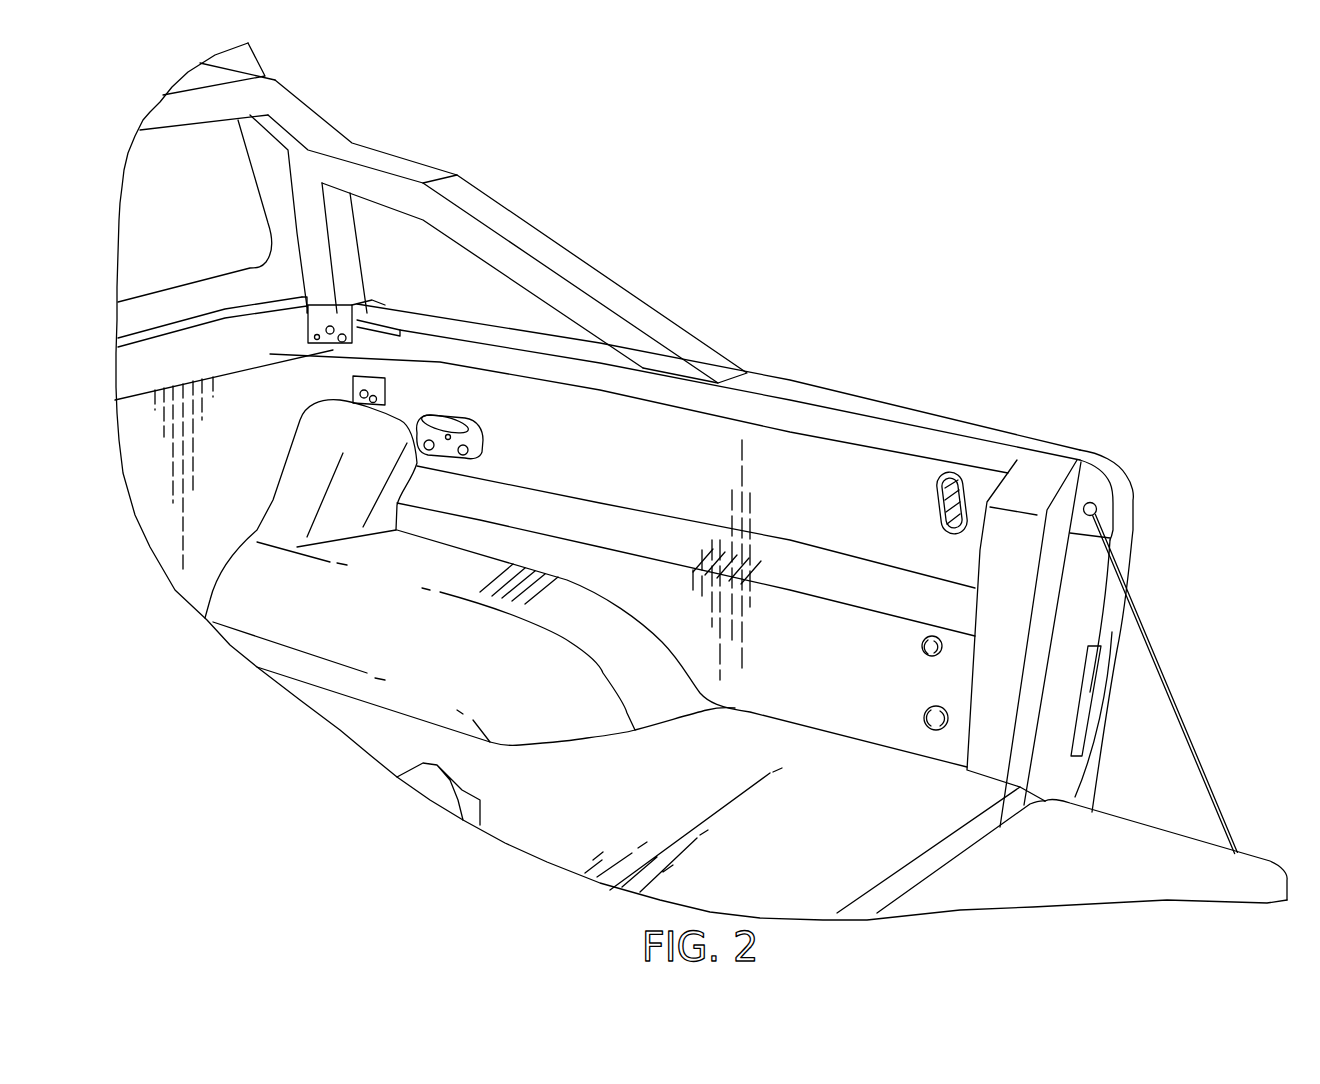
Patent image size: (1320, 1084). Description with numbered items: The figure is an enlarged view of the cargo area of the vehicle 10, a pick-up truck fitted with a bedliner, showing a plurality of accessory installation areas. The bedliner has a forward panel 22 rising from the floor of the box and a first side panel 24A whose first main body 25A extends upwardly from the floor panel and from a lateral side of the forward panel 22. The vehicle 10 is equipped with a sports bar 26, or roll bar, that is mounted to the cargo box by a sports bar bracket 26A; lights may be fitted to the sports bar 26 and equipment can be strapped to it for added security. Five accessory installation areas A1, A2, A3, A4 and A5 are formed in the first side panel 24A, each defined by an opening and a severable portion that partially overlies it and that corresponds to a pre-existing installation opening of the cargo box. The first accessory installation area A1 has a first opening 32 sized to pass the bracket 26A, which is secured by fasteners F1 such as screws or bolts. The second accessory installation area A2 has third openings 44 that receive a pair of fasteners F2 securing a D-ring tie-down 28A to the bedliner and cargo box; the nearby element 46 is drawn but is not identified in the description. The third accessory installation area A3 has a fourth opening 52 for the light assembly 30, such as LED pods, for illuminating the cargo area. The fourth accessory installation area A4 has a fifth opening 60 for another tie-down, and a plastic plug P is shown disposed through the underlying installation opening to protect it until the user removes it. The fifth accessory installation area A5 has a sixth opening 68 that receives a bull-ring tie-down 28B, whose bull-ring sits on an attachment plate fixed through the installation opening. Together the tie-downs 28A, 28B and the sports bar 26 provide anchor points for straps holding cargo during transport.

The vehicle 10 is at (913, 200).
The forward panel 22 is at (198, 451).
The first side panel 24A is at (833, 397).
The first main body 25A is at (680, 455).
The sports bar 26 is at (187, 110).
The sports bar bracket 26A is at (320, 317).
The D-ring tie-down 28A is at (478, 466).
The bull-ring tie-down 28B is at (960, 748).
The light assembly 30 is at (931, 465).
The first opening 32 is at (379, 415).
The third openings 44 is at (478, 477).
The anchor pin 46 is at (449, 450).
The fourth opening 52 is at (918, 486).
The fifth opening 60 is at (940, 660).
The sixth opening 68 is at (930, 740).
The first accessory installation area A1 is at (353, 415).
The second accessory installation area A2 is at (495, 466).
The third accessory installation area A3 is at (902, 465).
The fourth accessory installation area A4 is at (889, 640).
The fifth accessory installation area A5 is at (926, 742).
The fasteners F1 is at (363, 403).
The fasteners F2 is at (431, 452).
The plug P is at (915, 640).